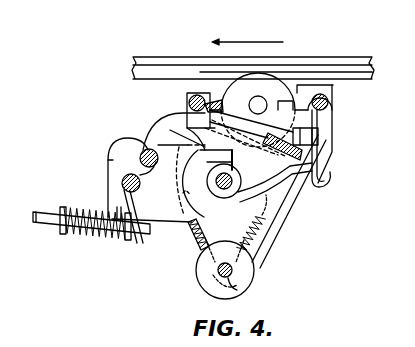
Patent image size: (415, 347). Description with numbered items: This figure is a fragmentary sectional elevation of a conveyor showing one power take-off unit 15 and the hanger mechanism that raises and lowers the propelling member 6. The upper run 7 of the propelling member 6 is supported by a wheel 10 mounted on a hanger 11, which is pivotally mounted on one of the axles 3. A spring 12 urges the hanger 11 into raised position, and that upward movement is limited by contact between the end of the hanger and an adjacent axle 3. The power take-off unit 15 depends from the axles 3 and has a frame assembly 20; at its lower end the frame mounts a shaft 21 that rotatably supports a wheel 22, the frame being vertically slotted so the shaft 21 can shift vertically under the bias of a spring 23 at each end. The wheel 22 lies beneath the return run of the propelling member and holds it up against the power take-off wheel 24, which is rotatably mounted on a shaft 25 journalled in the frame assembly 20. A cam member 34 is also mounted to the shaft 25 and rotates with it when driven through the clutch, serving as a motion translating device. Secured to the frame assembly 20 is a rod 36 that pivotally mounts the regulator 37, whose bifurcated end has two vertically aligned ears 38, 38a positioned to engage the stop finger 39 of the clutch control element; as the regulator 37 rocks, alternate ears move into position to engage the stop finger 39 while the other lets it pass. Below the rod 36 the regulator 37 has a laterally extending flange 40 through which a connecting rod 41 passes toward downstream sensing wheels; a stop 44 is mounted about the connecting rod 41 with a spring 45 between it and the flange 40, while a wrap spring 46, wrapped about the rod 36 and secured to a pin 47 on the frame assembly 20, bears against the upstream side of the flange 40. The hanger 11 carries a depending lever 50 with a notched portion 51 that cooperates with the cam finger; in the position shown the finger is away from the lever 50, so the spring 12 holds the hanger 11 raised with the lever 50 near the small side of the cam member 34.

The axle 3 is at (197, 94).
The propelling member 6 is at (373, 60).
The upper run 7 is at (347, 58).
The wheel 10 is at (259, 80).
The hanger 11 is at (317, 163).
The spring 12 is at (212, 103).
The power take-off unit 15 is at (167, 115).
The frame assembly 20 is at (284, 215).
The shaft 21 is at (237, 290).
The wheel 22 is at (255, 270).
The spring 23 is at (192, 223).
The power take-off wheel 24 is at (272, 210).
The shaft 25 is at (206, 184).
The cam member 34 is at (170, 130).
The rod 36 is at (124, 175).
The regulator 37 is at (110, 145).
The ear 38 is at (240, 157).
The ear 38a is at (222, 230).
The stop finger 39 is at (320, 136).
The flange 40 is at (130, 236).
The connecting rod 41 is at (45, 225).
The stop 44 is at (62, 233).
The spring 45 is at (80, 212).
The wrap spring 46 is at (110, 158).
The pin 47 is at (148, 149).
The lever 50 is at (180, 229).
The notched portion 51 is at (272, 227).